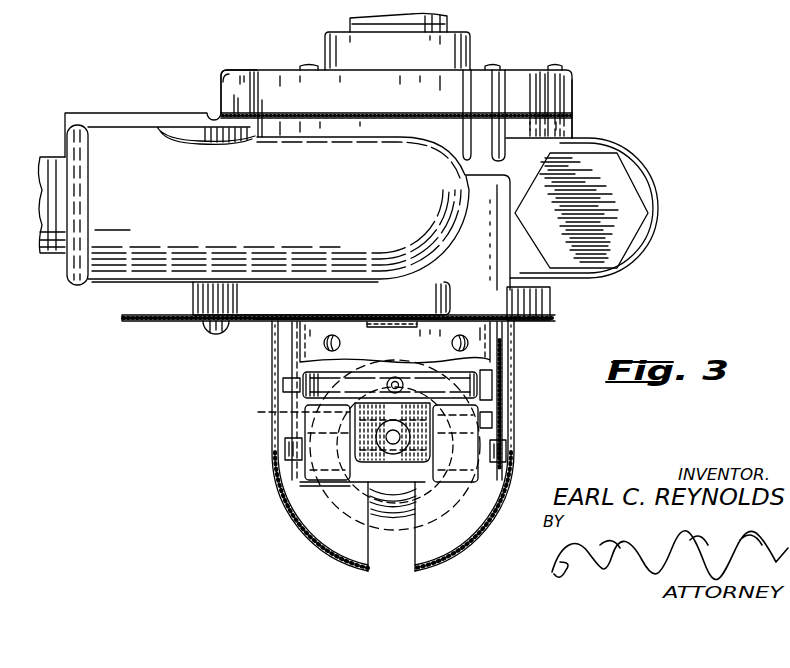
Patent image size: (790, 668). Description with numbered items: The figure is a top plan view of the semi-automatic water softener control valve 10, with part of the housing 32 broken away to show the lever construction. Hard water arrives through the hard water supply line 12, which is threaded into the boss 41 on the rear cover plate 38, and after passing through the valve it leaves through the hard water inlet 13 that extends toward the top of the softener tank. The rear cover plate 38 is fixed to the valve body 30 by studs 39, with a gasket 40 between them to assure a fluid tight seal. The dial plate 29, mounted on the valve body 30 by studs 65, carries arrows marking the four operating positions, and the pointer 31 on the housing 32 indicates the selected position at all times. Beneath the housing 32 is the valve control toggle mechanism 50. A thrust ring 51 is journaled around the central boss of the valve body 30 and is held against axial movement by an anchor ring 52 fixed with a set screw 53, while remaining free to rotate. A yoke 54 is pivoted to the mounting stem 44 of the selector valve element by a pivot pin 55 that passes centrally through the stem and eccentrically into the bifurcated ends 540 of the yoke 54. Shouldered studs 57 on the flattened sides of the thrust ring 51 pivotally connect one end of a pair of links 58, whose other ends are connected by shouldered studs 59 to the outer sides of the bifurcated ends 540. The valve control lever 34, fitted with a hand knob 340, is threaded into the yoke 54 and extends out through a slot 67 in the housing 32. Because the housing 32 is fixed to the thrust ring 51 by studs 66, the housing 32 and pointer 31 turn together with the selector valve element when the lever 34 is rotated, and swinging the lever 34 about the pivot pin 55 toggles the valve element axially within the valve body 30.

The semi-automatic control valve 10 is at (634, 157).
The hard water supply line 12 is at (437, 28).
The hard water inlet 13 is at (55, 258).
The dial plate 29 is at (170, 322).
The valve body 30 is at (545, 298).
The pointer 31 is at (388, 328).
The housing 32 is at (515, 375).
The valve control lever 34 is at (352, 510).
The rear cover plate 38 is at (560, 90).
The studs 39 is at (237, 68).
The gasket 40 is at (570, 116).
The boss 41 is at (468, 47).
The mounting stem 44 is at (425, 484).
The valve control toggle mechanism 50 is at (302, 478).
The thrust ring 51 is at (480, 378).
The anchor ring 52 is at (486, 398).
The set screw 53 is at (398, 378).
The yoke 54 is at (397, 467).
The pivot pin 55 is at (291, 416).
The shouldered studs 57 is at (290, 344).
The links 58 is at (292, 385).
The shouldered studs 59 is at (288, 448).
The studs 65 is at (205, 333).
The studs 66 is at (335, 338).
The slot 67 is at (372, 546).
The hand knob 340 is at (397, 517).
The bifurcated ends 540 is at (305, 481).